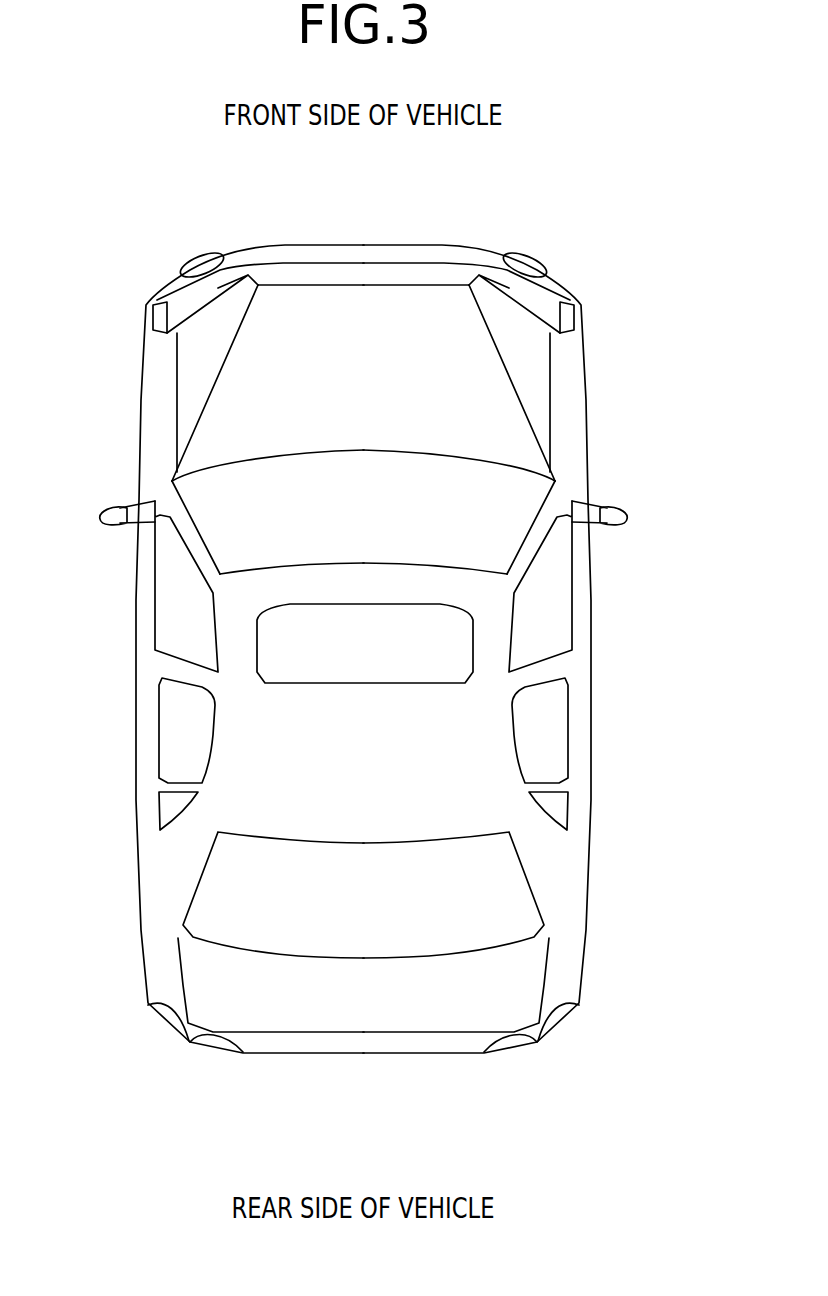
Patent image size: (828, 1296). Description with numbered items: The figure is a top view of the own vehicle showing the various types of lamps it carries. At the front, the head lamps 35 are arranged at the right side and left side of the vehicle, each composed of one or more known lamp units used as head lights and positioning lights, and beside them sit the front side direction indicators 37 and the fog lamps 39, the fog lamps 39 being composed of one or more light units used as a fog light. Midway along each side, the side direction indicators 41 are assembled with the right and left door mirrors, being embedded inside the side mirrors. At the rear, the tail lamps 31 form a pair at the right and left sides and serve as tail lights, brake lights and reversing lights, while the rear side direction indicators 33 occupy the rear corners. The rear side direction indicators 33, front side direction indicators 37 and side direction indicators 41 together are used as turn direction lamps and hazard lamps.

The tail lamp 31 is at (217, 1040).
The rear side direction indicator 33 is at (162, 1022).
The head lamp 35 is at (230, 285).
The front side direction indicator 37 is at (158, 318).
The fog lamp 39 is at (203, 266).
The side direction indicator 41 is at (113, 518).